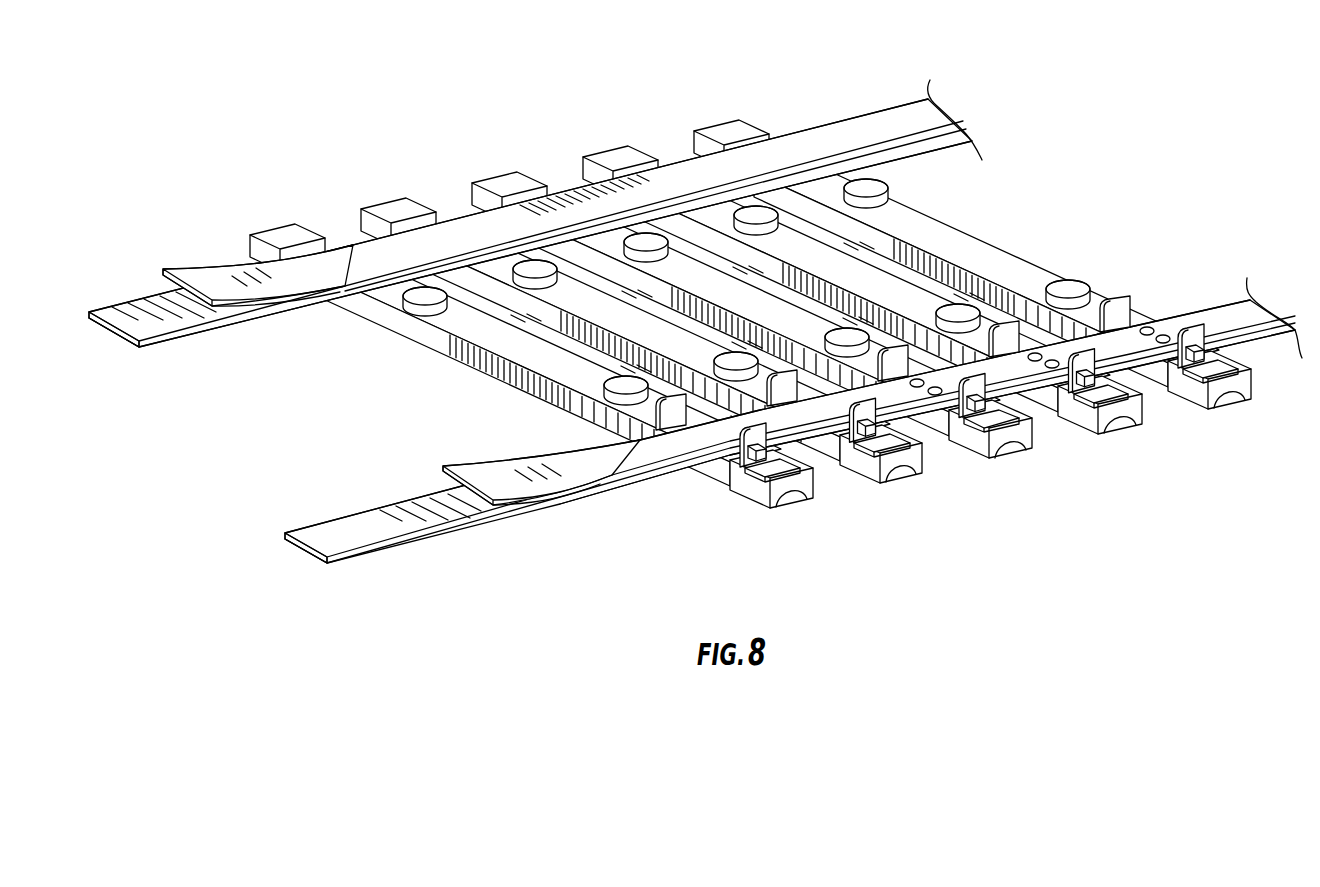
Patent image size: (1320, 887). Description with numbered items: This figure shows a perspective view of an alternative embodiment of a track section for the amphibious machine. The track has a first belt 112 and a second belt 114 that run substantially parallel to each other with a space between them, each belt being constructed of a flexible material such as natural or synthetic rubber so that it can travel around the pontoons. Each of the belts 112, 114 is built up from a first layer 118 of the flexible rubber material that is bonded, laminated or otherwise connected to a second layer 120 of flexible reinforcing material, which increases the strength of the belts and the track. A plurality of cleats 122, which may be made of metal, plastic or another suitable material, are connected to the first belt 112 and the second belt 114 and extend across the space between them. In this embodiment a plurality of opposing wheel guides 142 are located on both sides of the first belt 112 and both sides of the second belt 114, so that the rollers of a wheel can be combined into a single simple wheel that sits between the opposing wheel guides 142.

The first belt 112 is at (617, 463).
The second belt 114 is at (565, 200).
The first layer 118 is at (210, 282).
The second layer 120 is at (160, 318).
The cleats 122 is at (920, 463).
The opposing wheel guides 142 is at (1128, 313).